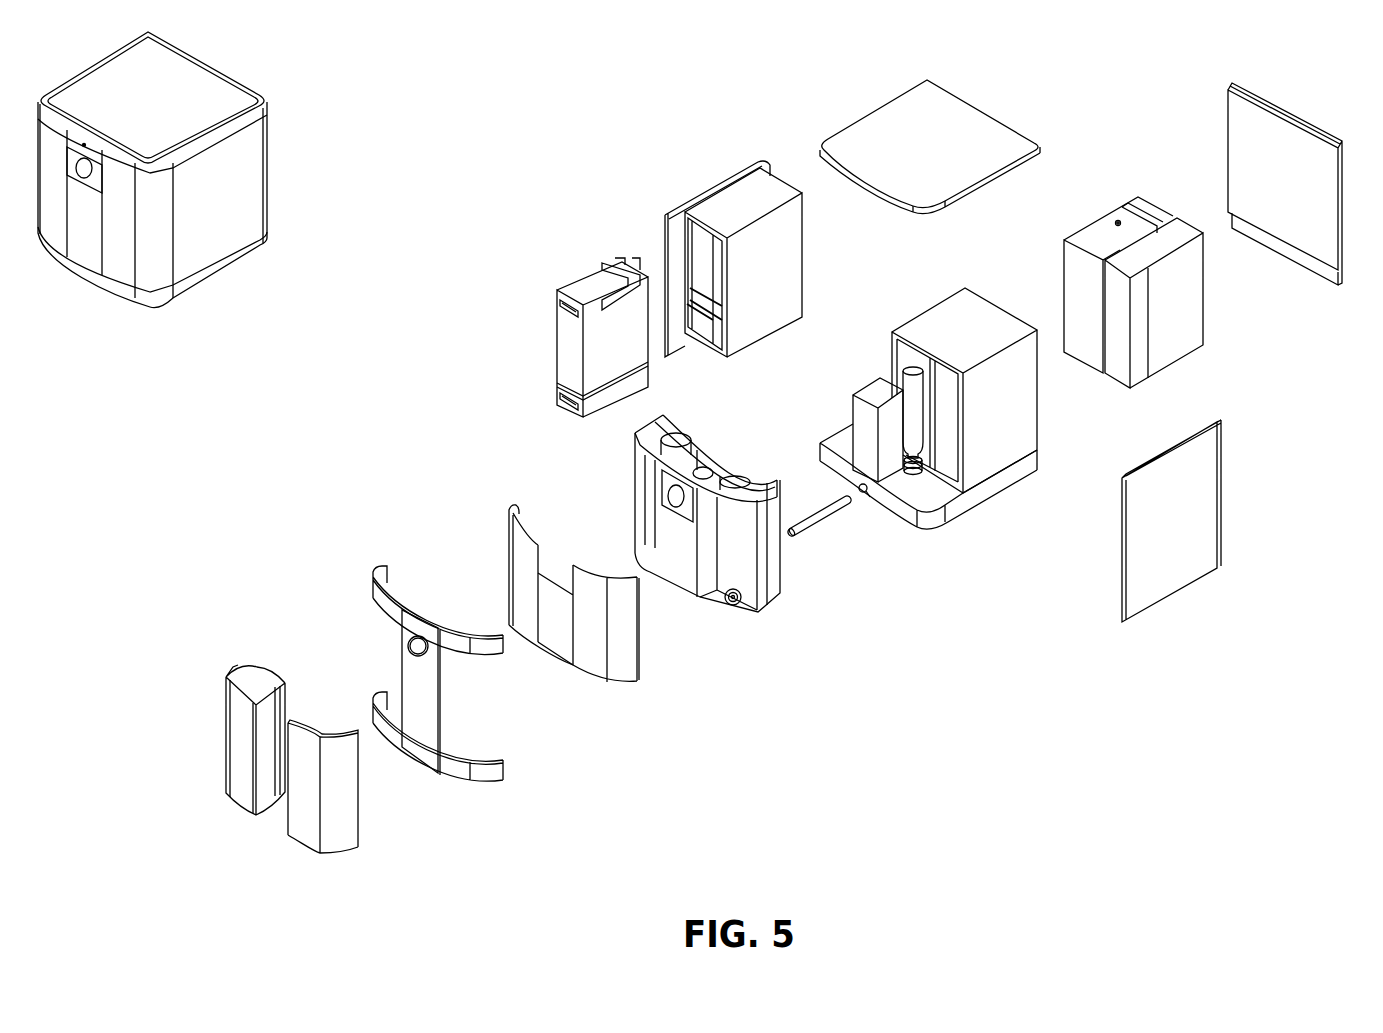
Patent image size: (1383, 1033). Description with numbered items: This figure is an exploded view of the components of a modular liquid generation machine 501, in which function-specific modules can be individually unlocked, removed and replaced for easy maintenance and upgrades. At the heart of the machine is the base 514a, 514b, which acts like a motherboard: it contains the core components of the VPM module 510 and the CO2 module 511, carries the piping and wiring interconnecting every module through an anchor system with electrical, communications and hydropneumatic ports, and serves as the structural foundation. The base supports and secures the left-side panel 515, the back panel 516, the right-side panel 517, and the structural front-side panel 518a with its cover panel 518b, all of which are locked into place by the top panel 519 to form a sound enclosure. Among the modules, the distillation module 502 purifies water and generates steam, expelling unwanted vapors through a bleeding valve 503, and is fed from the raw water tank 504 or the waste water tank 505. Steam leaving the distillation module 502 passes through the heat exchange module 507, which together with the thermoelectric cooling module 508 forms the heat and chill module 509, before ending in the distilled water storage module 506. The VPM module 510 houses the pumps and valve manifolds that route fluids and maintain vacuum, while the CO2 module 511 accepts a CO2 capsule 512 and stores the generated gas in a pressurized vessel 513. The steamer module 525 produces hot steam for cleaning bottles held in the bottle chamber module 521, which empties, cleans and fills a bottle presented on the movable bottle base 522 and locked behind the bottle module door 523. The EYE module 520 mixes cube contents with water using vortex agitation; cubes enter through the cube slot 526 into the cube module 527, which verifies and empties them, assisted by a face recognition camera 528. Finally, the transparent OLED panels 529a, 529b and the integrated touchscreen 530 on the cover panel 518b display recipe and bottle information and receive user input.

The modular machine 501 is at (292, 118).
The distillation module 502 is at (1092, 237).
The bleeding valve 503 is at (1118, 210).
The raw water tank 504 is at (567, 341).
The waste water tank 505 is at (560, 392).
The distilled water storage module 506 is at (1202, 310).
The heat exchange module 507 is at (1121, 167).
The steamer module 525 is at (1152, 208).
The thermoelectric cooling module 508 is at (1146, 342).
The heat and chill module 509 is at (1173, 252).
The VPM module 510 is at (868, 447).
The CO2 module 511 is at (865, 500).
The CO2 capsule 512 is at (813, 503).
The pressurized vessel 513 is at (917, 432).
The base 514a is at (938, 418).
The base 514b is at (965, 325).
The left-side panel 515 is at (715, 183).
The back panel 516 is at (1303, 122).
The right-side panel 517 is at (1187, 570).
The front-side panel 518a is at (714, 543).
The cover panel 518b is at (415, 656).
The top panel 519 is at (912, 123).
The EYE module 520 is at (238, 743).
The bottle chamber module 521 is at (717, 537).
The bottle base 522 is at (740, 602).
The bottle module door 523 is at (312, 802).
The cube slot 526 is at (435, 645).
The cube module 527 is at (710, 470).
The face recognition camera 528 is at (418, 615).
The OLED panel 529a is at (486, 553).
The OLED panel 529b is at (553, 606).
The touchscreen 530 is at (557, 640).